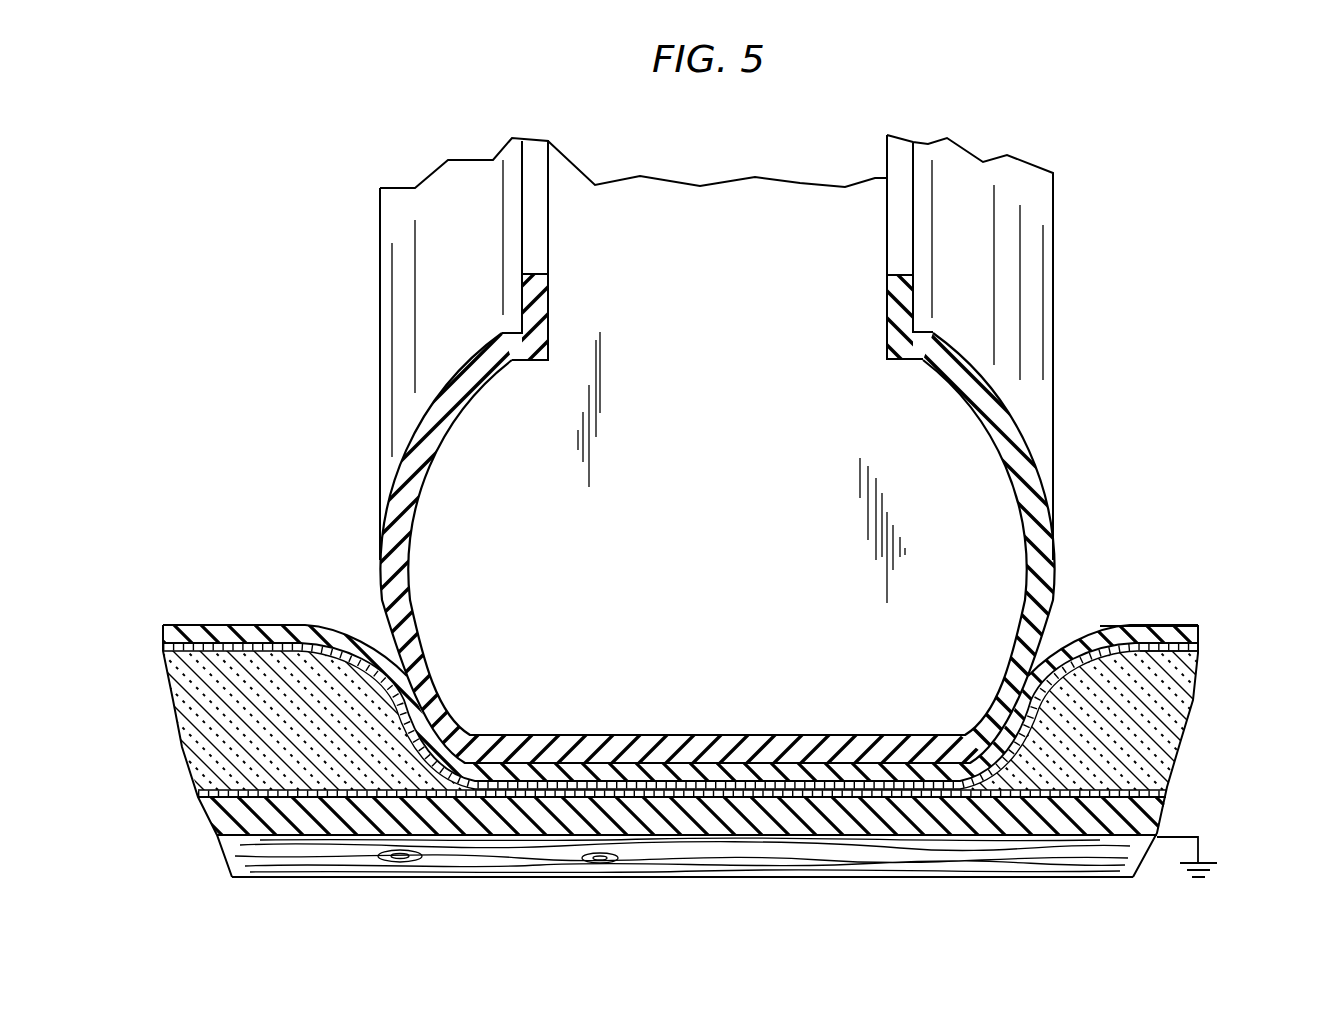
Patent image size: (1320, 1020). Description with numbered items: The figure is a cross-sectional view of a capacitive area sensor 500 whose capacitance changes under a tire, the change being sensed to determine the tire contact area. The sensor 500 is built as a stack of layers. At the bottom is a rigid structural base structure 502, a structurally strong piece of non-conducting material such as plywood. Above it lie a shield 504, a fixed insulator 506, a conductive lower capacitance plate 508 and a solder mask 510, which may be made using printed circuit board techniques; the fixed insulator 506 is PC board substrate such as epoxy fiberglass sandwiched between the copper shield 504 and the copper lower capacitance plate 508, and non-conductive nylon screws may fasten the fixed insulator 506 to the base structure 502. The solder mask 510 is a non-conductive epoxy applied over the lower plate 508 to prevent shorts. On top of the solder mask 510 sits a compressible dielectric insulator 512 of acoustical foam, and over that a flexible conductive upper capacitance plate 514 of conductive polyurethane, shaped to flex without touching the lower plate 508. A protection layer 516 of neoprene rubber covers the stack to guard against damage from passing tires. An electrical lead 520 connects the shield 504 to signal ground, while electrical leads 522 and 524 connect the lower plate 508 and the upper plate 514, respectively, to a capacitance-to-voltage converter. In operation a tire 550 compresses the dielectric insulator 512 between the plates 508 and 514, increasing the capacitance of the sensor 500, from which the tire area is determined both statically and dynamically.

The capacitive area sensor 500 is at (1210, 573).
The rigid structural base structure 502 is at (1120, 877).
The shield 504 is at (218, 842).
The fixed insulator 506 is at (212, 826).
The conductive lower capacitance plate 508 is at (197, 794).
The solder mask 510 is at (181, 752).
The compressible dielectric insulator 512 is at (172, 712).
The flexible conductive upper capacitance plate 514 is at (163, 630).
The protection layer 516 is at (1135, 627).
The electrical lead 520 is at (1205, 853).
The electrical lead 522 is at (1163, 800).
The electrical lead 524 is at (1200, 649).
The tire 550 is at (727, 551).